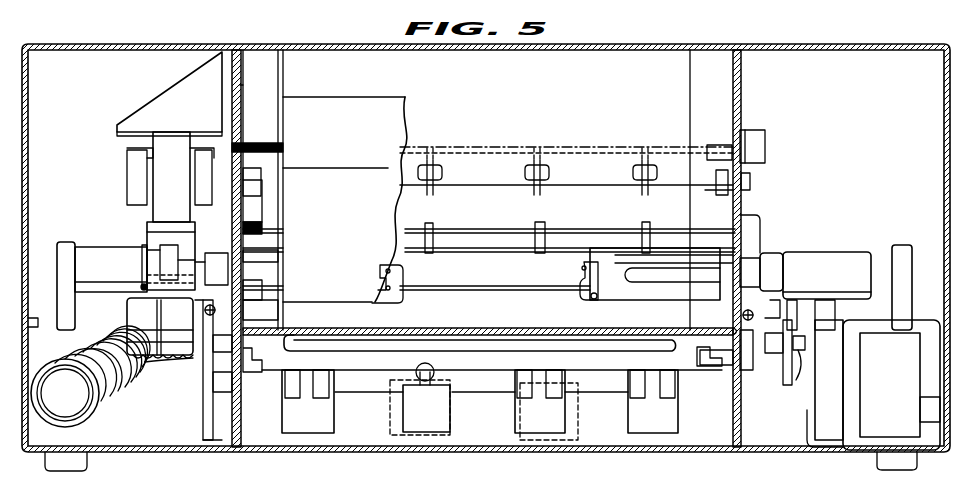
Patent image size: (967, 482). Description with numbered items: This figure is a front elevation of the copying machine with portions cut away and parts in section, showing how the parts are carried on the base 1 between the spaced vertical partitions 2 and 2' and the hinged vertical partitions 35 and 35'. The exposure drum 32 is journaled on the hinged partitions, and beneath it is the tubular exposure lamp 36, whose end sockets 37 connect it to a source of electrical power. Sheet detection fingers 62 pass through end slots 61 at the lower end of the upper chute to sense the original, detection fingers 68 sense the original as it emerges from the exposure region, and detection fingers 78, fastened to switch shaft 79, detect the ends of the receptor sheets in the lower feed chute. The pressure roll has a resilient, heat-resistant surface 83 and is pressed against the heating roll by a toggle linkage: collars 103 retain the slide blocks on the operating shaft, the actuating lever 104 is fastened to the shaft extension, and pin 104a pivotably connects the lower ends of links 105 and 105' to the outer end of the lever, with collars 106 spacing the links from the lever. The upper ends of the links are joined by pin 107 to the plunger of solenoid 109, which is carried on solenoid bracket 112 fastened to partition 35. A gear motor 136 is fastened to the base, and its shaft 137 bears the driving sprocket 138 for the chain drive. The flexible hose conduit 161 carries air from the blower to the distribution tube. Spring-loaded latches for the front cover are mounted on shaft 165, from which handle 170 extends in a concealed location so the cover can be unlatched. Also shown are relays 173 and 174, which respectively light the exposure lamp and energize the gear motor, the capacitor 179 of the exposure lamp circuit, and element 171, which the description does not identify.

The base 1 is at (185, 454).
The vertical partition 2 is at (252, 387).
The vertical partition 2' is at (726, 393).
The exposure drum 32 is at (745, 201).
The hinged vertical partition 35 is at (257, 248).
The hinged vertical partition 35' is at (727, 248).
The tubular exposure lamp 36 is at (80, 245).
The end sockets 37 is at (60, 278).
The end slots 61 is at (437, 172).
The sheet detection fingers 62 is at (443, 190).
The detection fingers 68 is at (530, 244).
The detection fingers 78 is at (645, 242).
The switch shaft 79 is at (660, 262).
The resilient heat-resistant surface 83 is at (590, 293).
The collars 103 is at (773, 267).
The actuating lever 104 is at (167, 262).
The pin 104a is at (140, 292).
The link 105 is at (128, 265).
The link 105' is at (213, 257).
The collars 106 is at (141, 286).
The pin 107 is at (147, 240).
The solenoid 109 is at (135, 175).
The solenoid bracket 112 is at (179, 93).
The gear motor 136 is at (907, 398).
The shaft 137 is at (797, 380).
The driving sprocket 138 is at (785, 384).
The flexible hose conduit 161 is at (110, 380).
The shaft 165 is at (444, 320).
The handle 170 is at (496, 328).
The module 171 is at (321, 423).
The relay 173 is at (554, 421).
The relay 174 is at (666, 421).
The capacitor 179 is at (437, 379).